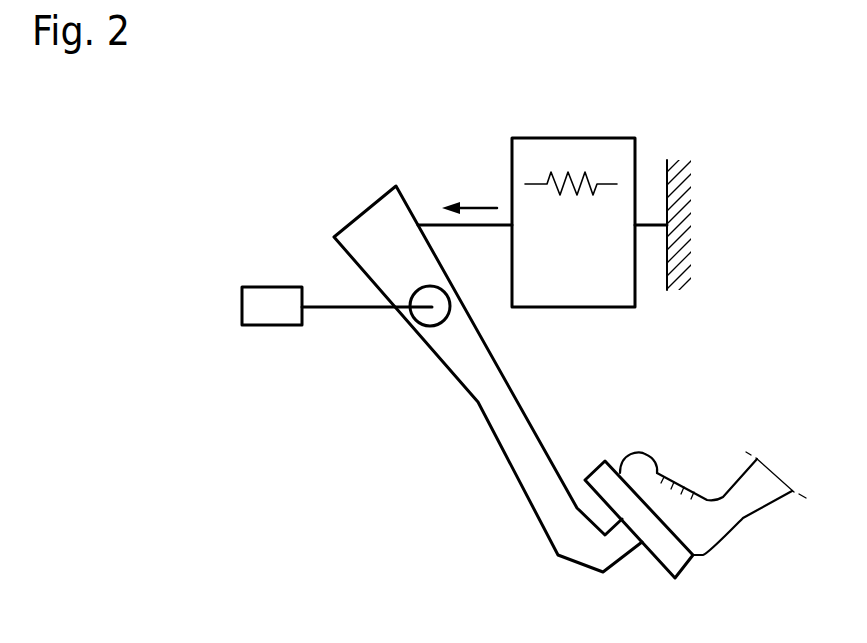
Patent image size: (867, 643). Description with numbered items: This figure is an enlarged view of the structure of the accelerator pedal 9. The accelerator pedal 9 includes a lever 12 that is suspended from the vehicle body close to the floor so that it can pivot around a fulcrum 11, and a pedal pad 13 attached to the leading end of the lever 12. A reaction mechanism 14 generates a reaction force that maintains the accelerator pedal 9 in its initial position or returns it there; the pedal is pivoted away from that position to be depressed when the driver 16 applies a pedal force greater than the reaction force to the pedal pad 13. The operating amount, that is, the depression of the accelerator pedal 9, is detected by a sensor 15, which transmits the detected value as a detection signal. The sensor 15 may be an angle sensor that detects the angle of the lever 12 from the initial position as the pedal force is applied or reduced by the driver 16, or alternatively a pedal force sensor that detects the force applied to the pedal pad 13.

The accelerator pedal 9 is at (433, 433).
The fulcrum 11 is at (422, 327).
The lever 12 is at (503, 452).
The pedal pad 13 is at (688, 560).
The reaction mechanism 14 is at (575, 138).
The sensor 15 is at (270, 287).
The driver 16 is at (762, 500).